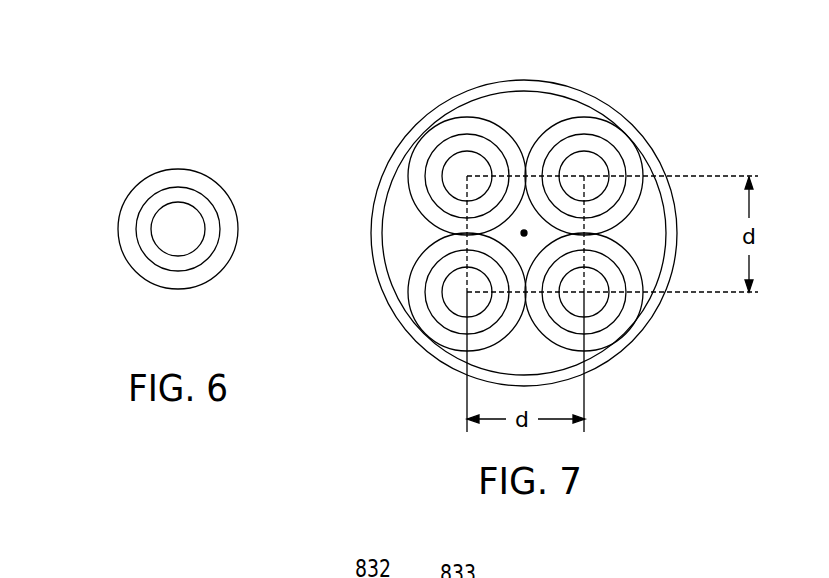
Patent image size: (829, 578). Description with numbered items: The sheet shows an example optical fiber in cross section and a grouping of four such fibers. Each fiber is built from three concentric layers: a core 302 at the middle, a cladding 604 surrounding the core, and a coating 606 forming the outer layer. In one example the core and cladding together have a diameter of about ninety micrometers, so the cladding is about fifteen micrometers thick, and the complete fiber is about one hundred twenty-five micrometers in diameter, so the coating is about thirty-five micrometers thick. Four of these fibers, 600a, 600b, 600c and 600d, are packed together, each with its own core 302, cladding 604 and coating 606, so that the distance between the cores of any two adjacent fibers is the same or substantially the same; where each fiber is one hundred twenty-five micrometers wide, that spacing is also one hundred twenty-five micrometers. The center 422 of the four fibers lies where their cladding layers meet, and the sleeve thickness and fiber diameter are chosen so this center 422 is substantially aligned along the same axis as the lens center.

In FIG. 6, the core 302 is at (162, 227).
In FIG. 7, the core 302 is at (448, 183).
In FIG. 6, the cladding 604 is at (148, 207).
In FIG. 7, the cladding 604 is at (433, 167).
In FIG. 6, the coating 606 is at (153, 181).
In FIG. 7, the coating 606 is at (430, 140).
In FIG. 7, the fiber 600a is at (413, 120).
In FIG. 7, the fiber 600b is at (555, 115).
In FIG. 7, the fiber 600c is at (598, 355).
In FIG. 7, the fiber 600d is at (455, 355).
In FIG. 7, the center of fibers 422 is at (528, 233).